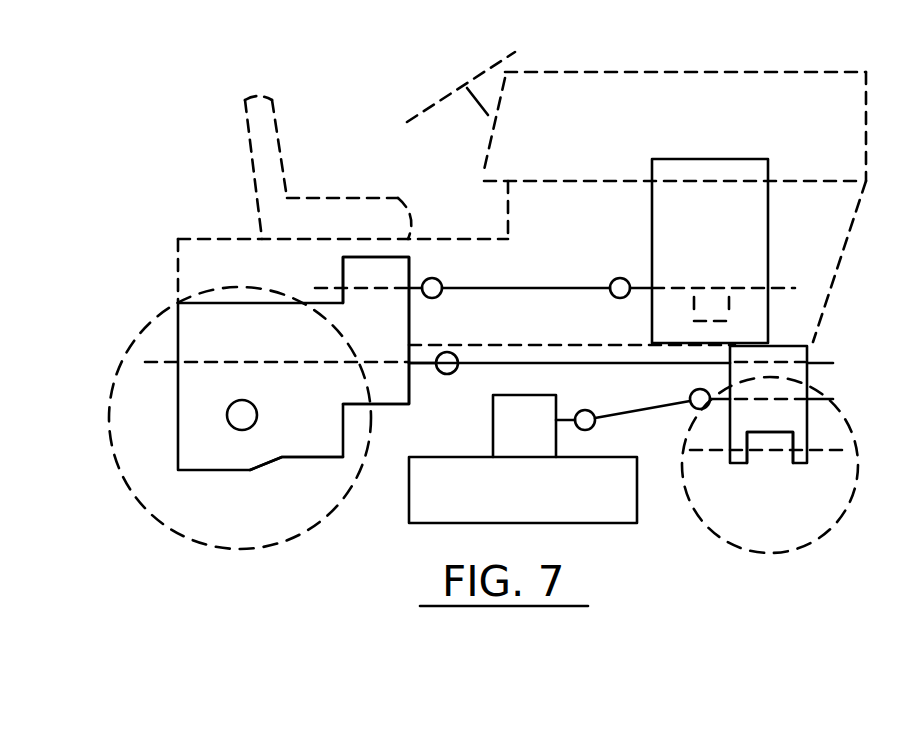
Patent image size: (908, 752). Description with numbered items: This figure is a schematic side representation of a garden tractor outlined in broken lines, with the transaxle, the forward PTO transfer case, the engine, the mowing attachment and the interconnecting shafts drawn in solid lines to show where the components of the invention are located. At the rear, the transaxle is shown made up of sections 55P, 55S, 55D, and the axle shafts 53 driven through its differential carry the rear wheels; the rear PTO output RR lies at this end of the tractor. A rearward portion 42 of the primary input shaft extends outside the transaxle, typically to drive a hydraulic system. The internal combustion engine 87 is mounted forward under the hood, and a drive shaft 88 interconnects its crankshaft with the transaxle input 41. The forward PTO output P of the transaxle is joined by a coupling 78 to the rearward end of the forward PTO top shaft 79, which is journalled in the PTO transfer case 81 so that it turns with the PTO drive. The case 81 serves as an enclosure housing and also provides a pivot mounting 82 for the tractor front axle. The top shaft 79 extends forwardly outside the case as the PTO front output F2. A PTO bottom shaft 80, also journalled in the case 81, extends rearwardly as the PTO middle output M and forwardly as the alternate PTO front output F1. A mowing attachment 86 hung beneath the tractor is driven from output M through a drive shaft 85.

The transaxle input 41 is at (418, 275).
The rearward portion of primary input shaft 42 is at (330, 288).
The axle shafts 53 is at (258, 402).
The transaxle section 55D is at (192, 476).
The transaxle section 55P is at (387, 405).
The transaxle section 55S is at (300, 460).
The coupling 78 is at (458, 372).
The forward PTO top shaft 79 is at (568, 370).
The PTO bottom shaft 80 is at (770, 405).
The PTO transfer case 81 is at (796, 372).
The pivot mounting 82 is at (752, 450).
The drive shaft 85 is at (629, 408).
The mowing attachment 86 is at (637, 497).
The internal combustion engine 87 is at (755, 240).
The drive shaft 88 is at (507, 284).
The alternate PTO front output F1 is at (822, 405).
The PTO front output F2 is at (822, 357).
The PTO middle output M is at (715, 410).
The forward PTO output P is at (422, 368).
The rear PTO output RR is at (158, 365).